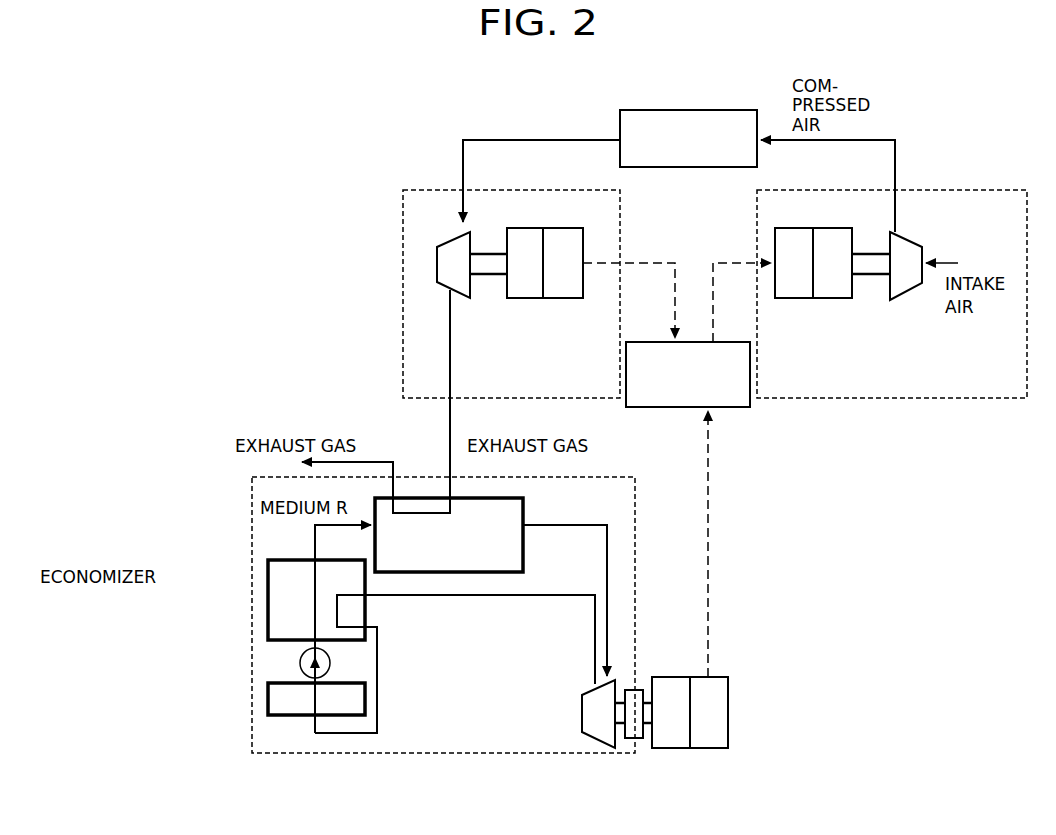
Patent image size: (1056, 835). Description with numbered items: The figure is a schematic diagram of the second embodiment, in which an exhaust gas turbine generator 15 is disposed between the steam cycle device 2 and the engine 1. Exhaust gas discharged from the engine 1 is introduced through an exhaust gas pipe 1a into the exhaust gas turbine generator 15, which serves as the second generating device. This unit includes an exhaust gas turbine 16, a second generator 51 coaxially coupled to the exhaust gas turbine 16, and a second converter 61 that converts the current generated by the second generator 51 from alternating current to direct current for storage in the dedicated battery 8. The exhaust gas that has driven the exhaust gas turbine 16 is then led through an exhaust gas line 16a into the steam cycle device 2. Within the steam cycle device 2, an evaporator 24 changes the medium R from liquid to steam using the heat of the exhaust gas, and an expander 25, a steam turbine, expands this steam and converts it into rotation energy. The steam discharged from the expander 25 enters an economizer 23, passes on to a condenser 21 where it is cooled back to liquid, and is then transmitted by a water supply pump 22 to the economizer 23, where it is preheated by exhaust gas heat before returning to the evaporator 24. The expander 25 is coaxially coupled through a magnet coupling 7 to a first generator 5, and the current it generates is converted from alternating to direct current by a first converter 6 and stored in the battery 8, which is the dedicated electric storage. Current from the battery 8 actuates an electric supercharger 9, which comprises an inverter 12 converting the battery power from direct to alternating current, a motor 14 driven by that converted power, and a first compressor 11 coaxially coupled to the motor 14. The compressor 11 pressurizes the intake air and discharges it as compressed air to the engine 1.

The engine 1 is at (720, 110).
The exhaust gas pipe 1a is at (462, 138).
The steam cycle device 2 is at (364, 758).
The first generator 5 is at (668, 735).
The first converter 6 is at (718, 677).
The magnet coupling 7 is at (640, 740).
The dedicated battery 8 is at (730, 407).
The electric supercharger 9 is at (882, 404).
The first compressor 11 is at (905, 232).
The inverter 12 is at (793, 290).
The motor 14 is at (828, 290).
The exhaust gas turbine generator 15 is at (422, 186).
The exhaust gas turbine 16 is at (437, 265).
The exhaust gas line 16a is at (450, 352).
The condenser 21 is at (268, 700).
The water supply pump 22 is at (300, 665).
The economizer 23 is at (268, 597).
The evaporator 24 is at (523, 515).
The expander 25 is at (582, 712).
The second generator 51 is at (525, 238).
The second converter 61 is at (560, 290).